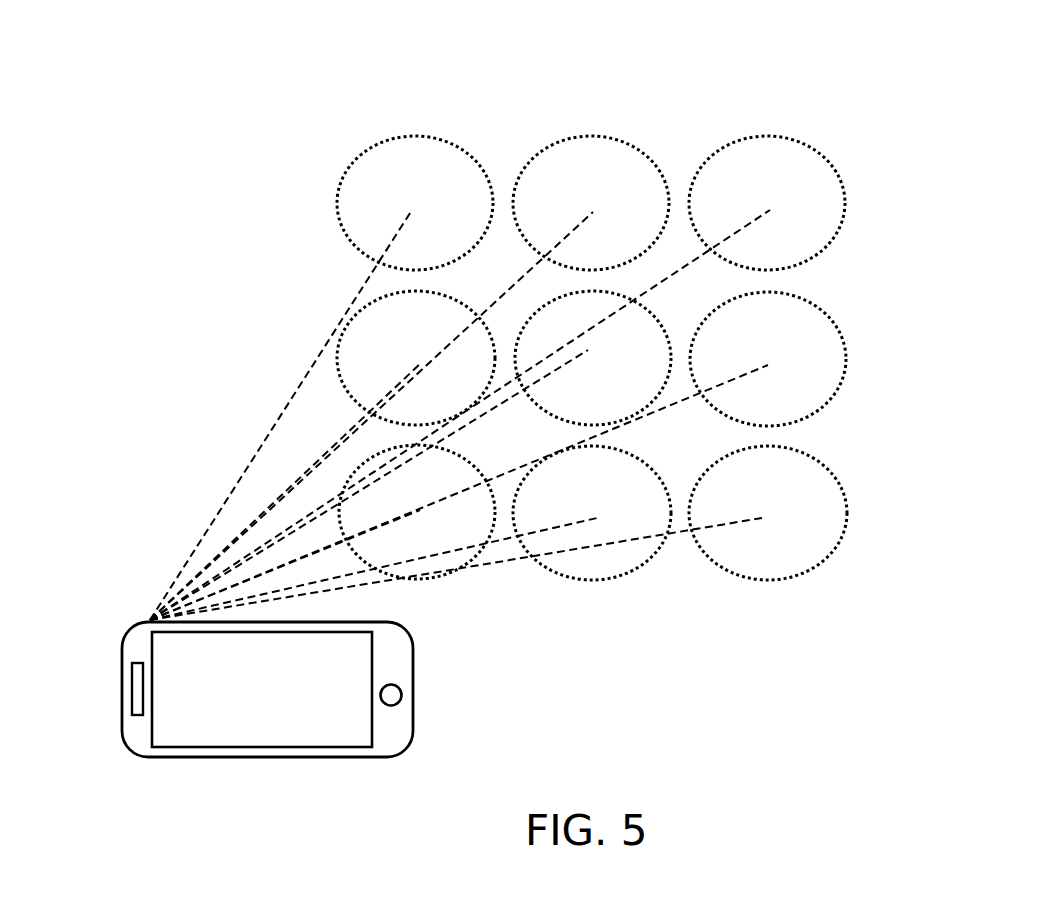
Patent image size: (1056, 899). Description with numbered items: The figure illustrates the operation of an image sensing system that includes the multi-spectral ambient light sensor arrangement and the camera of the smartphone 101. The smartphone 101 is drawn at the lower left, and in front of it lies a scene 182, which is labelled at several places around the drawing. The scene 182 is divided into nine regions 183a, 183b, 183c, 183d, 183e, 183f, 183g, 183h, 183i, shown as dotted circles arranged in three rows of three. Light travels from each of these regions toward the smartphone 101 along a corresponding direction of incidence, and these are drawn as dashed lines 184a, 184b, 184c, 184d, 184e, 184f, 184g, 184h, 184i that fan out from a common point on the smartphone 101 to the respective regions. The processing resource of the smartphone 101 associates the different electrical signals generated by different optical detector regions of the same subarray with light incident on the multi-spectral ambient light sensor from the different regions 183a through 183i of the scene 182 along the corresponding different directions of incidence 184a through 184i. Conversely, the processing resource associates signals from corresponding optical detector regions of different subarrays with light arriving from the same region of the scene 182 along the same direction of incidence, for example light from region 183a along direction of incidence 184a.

The smartphone 101 is at (120, 723).
The scene 182 is at (616, 34).
The region of the scene 183a is at (407, 137).
The region of the scene 183b is at (567, 137).
The region of the scene 183c is at (767, 137).
The region of the scene 183d is at (385, 294).
The region of the scene 183e is at (663, 333).
The region of the scene 183f is at (847, 342).
The region of the scene 183g is at (470, 560).
The region of the scene 183h is at (627, 573).
The region of the scene 183i is at (845, 532).
The direction of incidence 184a is at (400, 225).
The direction of incidence 184b is at (575, 230).
The direction of incidence 184c is at (758, 220).
The direction of incidence 184d is at (408, 378).
The direction of incidence 184e is at (563, 368).
The direction of incidence 184f is at (758, 372).
The direction of incidence 184g is at (410, 513).
The direction of incidence 184h is at (500, 543).
The direction of incidence 184i is at (737, 525).